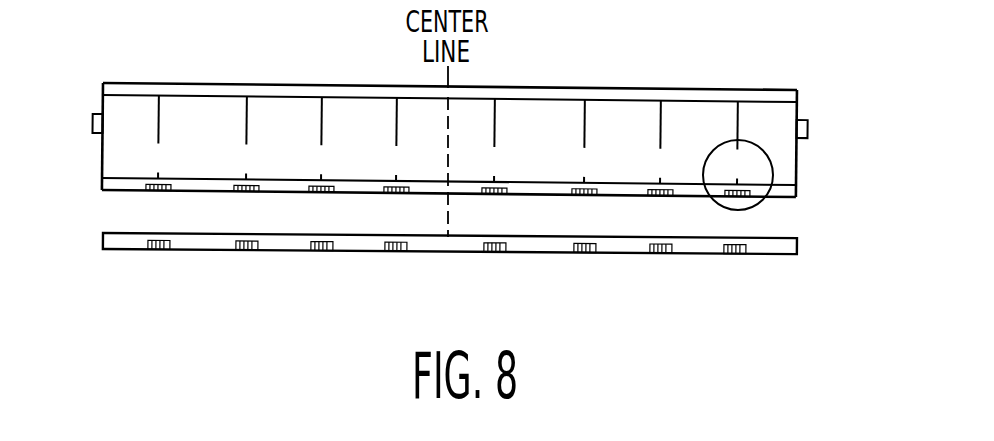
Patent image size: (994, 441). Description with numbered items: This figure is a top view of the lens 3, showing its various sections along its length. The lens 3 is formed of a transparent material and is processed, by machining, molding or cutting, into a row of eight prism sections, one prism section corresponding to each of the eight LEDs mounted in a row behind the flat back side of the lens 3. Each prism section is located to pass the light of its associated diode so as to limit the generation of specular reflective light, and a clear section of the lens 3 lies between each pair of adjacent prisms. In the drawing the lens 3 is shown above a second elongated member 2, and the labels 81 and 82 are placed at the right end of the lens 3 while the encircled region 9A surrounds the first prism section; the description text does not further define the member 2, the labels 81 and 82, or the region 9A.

The lower circuit board 2 is at (85, 237).
The lens 3 is at (455, 119).
The print head circuit board 81 is at (798, 181).
The cover plate 82 is at (708, 90).
The connector detail region 9A is at (743, 200).